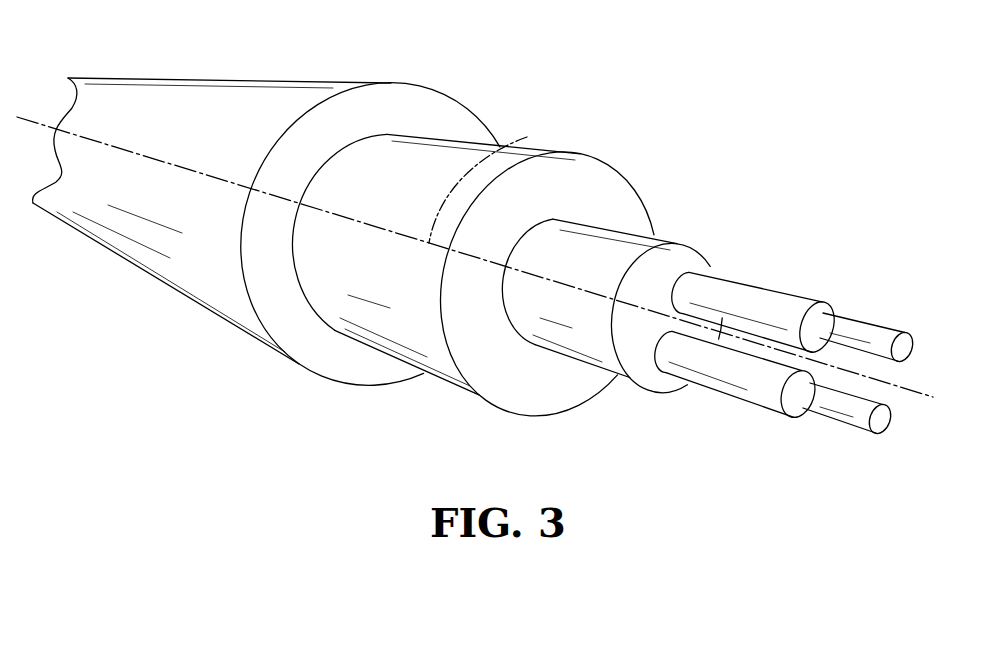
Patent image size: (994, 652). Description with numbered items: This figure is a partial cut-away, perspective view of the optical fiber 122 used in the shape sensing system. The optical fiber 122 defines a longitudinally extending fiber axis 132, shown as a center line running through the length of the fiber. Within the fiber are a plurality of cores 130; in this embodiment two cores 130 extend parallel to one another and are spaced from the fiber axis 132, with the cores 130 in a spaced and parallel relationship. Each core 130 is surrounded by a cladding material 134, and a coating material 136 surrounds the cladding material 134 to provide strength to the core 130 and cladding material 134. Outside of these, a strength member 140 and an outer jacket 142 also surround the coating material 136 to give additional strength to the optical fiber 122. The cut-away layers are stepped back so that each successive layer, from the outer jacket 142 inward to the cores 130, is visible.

The optical fiber 122 is at (335, 363).
The cores 130 is at (863, 330).
The fiber axis 132 is at (520, 138).
The cladding material 134 is at (768, 298).
The coating material 136 is at (637, 245).
The strength member 140 is at (593, 192).
The outer jacket 142 is at (440, 118).